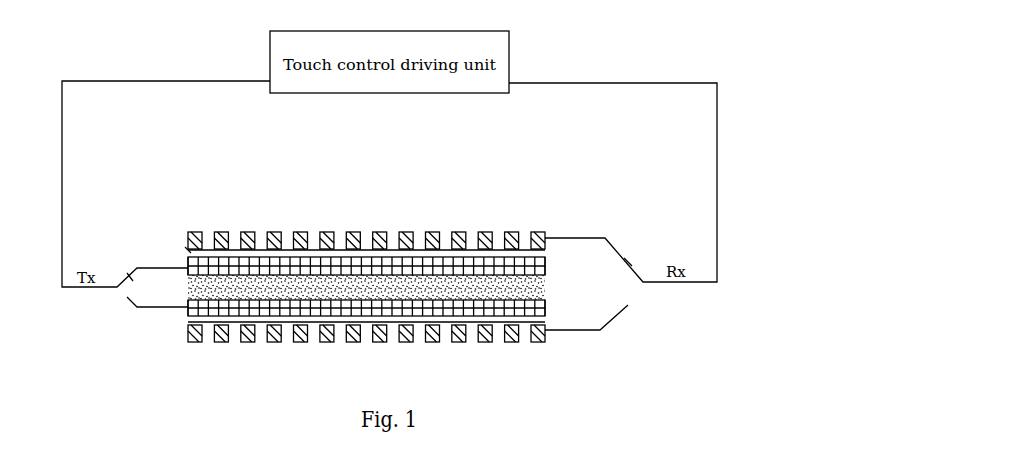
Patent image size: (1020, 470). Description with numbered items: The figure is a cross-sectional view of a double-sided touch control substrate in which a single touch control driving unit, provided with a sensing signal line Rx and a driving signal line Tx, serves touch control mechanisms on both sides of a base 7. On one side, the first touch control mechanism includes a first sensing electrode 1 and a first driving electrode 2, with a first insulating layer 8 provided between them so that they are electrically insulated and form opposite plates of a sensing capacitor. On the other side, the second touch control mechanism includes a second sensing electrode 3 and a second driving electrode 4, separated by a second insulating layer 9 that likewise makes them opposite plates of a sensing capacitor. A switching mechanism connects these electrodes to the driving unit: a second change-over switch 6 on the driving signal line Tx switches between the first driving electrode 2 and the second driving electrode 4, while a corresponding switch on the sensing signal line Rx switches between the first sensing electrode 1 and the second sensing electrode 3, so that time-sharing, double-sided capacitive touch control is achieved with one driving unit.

The first sensing electrode 1 is at (300, 245).
The first driving electrode 2 is at (432, 257).
The second sensing electrode 3 is at (247, 331).
The second driving electrode 4 is at (383, 302).
The second change-over switch 6 is at (115, 302).
The base 7 is at (472, 288).
The first insulating layer 8 is at (190, 250).
The second insulating layer 9 is at (178, 327).